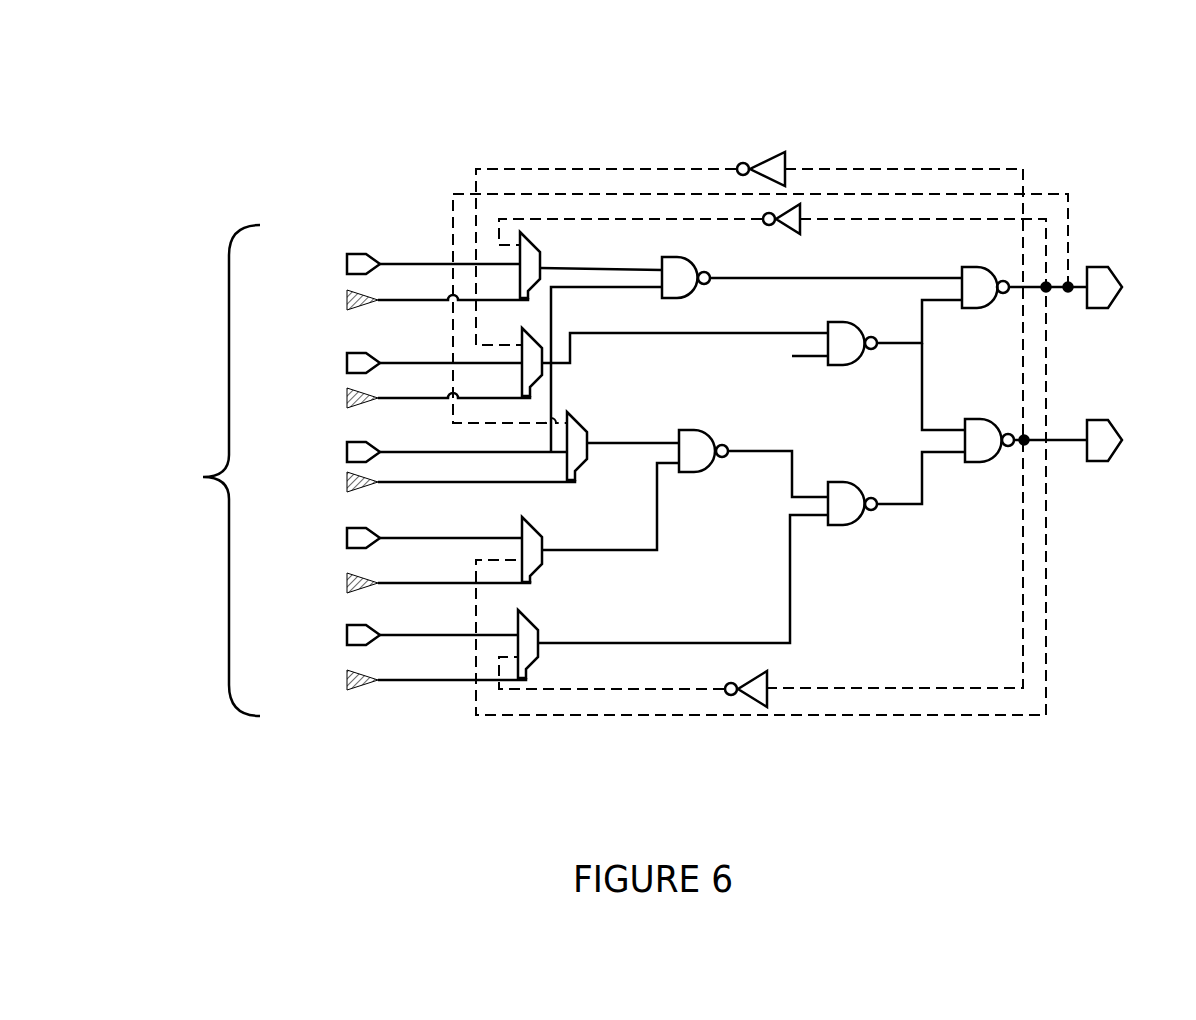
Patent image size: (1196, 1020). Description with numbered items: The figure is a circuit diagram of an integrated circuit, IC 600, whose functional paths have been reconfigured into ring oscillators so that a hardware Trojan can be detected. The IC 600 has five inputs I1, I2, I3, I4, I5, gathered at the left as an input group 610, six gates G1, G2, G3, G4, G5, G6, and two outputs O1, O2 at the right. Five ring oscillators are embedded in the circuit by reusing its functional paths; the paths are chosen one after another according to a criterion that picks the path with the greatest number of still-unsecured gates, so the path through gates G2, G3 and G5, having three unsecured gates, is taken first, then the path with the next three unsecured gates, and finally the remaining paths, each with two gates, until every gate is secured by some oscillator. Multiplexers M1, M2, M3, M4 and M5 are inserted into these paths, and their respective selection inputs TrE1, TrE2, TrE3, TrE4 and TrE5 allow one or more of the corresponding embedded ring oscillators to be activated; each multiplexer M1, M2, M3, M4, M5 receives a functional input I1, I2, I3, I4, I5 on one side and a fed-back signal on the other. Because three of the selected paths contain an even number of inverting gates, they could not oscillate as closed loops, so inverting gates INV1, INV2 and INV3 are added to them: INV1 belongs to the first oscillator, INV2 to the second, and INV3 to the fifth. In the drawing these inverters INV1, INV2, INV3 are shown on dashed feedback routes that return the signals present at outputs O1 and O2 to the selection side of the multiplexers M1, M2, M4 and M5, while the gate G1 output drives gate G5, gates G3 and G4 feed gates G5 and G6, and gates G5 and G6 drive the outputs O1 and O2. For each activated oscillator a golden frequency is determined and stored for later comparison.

The IC 600 is at (945, 78).
The input terminals 610 is at (205, 478).
The input I1 is at (415, 264).
The input I2 is at (416, 363).
The input I3 is at (486, 375).
The input I4 is at (416, 538).
The input I5 is at (414, 635).
The selection input TrE1 is at (407, 300).
The selection input TrE2 is at (408, 398).
The selection input TrE3 is at (430, 482).
The selection input TrE4 is at (408, 583).
The selection input TrE5 is at (406, 680).
The multiplexer M1 is at (591, 265).
The multiplexer M2 is at (659, 353).
The multiplexer M3 is at (623, 437).
The multiplexer M4 is at (600, 522).
The multiplexer M5 is at (673, 596).
The gate G1 is at (812, 290).
The gate G2 is at (753, 429).
The gate G3 is at (896, 365).
The gate G4 is at (896, 504).
The gate G5 is at (1024, 305).
The gate G6 is at (1024, 460).
The inverting gate INV1 is at (749, 407).
The inverting gate INV2 is at (761, 459).
The inverting gate INV3 is at (666, 682).
The output O1 is at (1125, 287).
The output O2 is at (1125, 440).